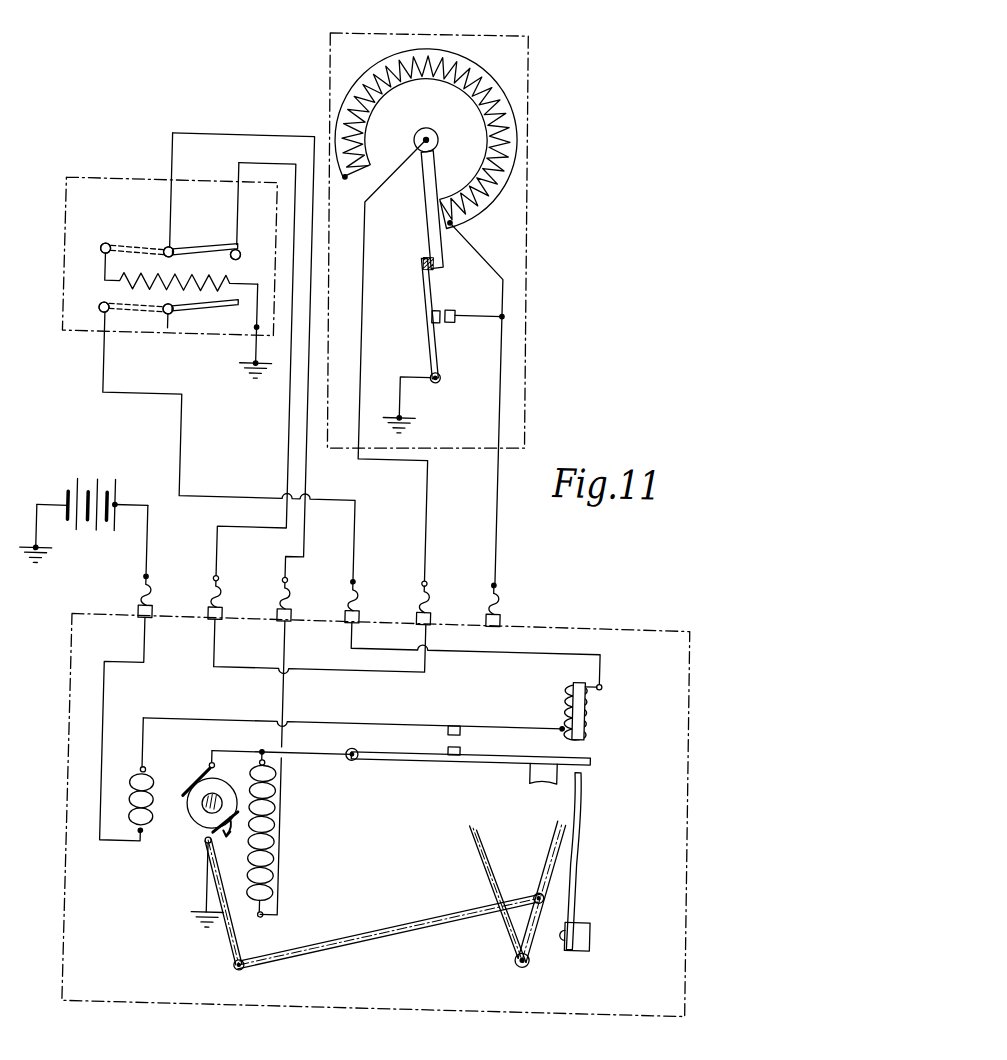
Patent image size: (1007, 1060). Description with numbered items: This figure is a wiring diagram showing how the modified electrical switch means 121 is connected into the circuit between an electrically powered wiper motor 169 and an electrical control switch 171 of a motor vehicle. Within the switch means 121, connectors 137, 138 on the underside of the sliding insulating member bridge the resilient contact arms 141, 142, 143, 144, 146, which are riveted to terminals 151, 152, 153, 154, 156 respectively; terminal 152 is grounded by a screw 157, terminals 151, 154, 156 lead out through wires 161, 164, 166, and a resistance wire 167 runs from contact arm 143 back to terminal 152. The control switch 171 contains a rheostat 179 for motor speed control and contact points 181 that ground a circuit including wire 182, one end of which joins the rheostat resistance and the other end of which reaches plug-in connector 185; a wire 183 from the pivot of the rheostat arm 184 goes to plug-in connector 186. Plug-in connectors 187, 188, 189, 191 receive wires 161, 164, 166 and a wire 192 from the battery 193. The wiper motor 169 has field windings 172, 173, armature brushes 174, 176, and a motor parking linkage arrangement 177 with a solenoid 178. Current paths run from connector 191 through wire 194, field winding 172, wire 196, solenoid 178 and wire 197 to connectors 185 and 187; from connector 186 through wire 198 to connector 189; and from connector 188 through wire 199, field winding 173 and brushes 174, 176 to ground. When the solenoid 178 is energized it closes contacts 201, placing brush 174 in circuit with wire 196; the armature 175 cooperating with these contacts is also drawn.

The electrical switch means 121 is at (53, 221).
The connector 137 is at (188, 315).
The connector 138 is at (185, 253).
The contact arm 141 is at (93, 320).
The contact arm 142 is at (160, 320).
The contact arm 143 is at (91, 251).
The contact arm 144 is at (158, 253).
The contact arm 146 is at (224, 255).
The terminal 151 is at (75, 343).
The terminal 152 is at (151, 344).
The terminal 153 is at (91, 200).
The terminal 154 is at (151, 203).
The terminal 156 is at (215, 203).
The screw 157 is at (249, 354).
The wire 161 is at (98, 385).
The wire 164 is at (277, 136).
The wire 166 is at (251, 167).
The resistance wire 167 is at (219, 284).
The wiper motor 169 is at (693, 802).
The electrical control switch 171 is at (517, 227).
The field winding 172 is at (159, 832).
The field winding 173 is at (281, 827).
The armature brush 174 is at (192, 795).
The armature 175 is at (468, 849).
The armature brush 176 is at (232, 843).
The motor parking linkage arrangement 177 is at (403, 937).
The solenoid 178 is at (594, 707).
The rheostat 179 is at (503, 159).
The contact points 181 is at (440, 322).
The wire 182 is at (495, 295).
The wire 183 is at (392, 272).
The rheostat arm 184 is at (419, 159).
The plug-in connector 185 is at (500, 597).
The plug-in connector 186 is at (430, 599).
The plug-in connector 187 is at (360, 601).
The plug-in connector 188 is at (290, 603).
The plug-in connector 189 is at (224, 604).
The plug-in connector 191 is at (150, 607).
The wire 192 is at (159, 542).
The battery 193 is at (121, 449).
The wire 194 is at (106, 718).
The wire 196 is at (356, 700).
The wire 197 is at (539, 649).
The wire 198 is at (382, 676).
The wire 199 is at (285, 691).
The contacts 201 is at (465, 751).